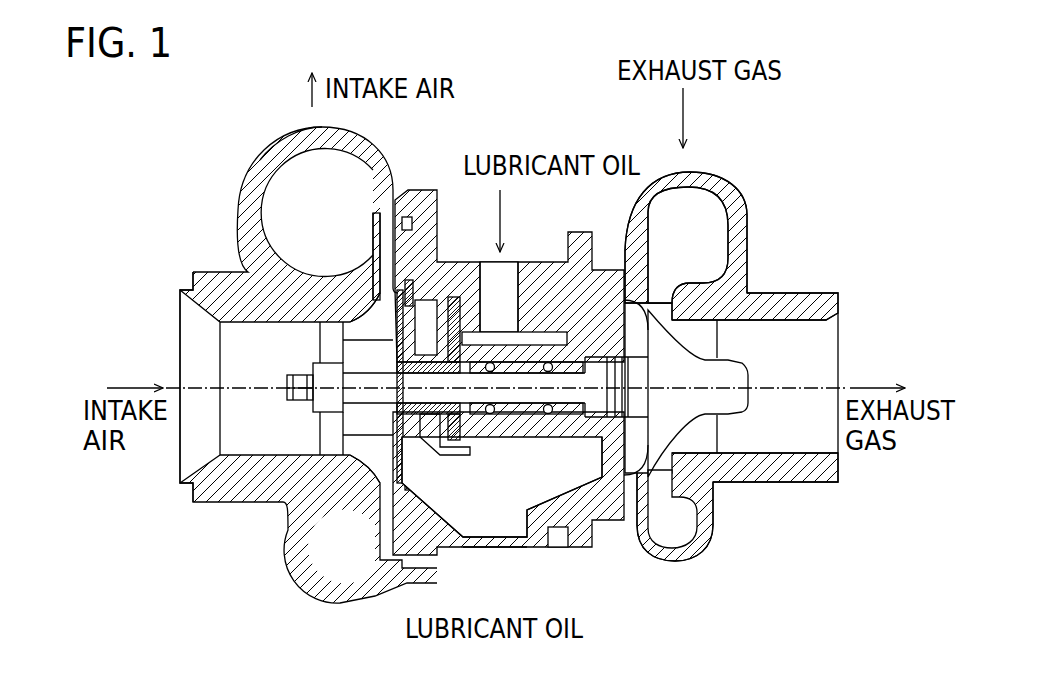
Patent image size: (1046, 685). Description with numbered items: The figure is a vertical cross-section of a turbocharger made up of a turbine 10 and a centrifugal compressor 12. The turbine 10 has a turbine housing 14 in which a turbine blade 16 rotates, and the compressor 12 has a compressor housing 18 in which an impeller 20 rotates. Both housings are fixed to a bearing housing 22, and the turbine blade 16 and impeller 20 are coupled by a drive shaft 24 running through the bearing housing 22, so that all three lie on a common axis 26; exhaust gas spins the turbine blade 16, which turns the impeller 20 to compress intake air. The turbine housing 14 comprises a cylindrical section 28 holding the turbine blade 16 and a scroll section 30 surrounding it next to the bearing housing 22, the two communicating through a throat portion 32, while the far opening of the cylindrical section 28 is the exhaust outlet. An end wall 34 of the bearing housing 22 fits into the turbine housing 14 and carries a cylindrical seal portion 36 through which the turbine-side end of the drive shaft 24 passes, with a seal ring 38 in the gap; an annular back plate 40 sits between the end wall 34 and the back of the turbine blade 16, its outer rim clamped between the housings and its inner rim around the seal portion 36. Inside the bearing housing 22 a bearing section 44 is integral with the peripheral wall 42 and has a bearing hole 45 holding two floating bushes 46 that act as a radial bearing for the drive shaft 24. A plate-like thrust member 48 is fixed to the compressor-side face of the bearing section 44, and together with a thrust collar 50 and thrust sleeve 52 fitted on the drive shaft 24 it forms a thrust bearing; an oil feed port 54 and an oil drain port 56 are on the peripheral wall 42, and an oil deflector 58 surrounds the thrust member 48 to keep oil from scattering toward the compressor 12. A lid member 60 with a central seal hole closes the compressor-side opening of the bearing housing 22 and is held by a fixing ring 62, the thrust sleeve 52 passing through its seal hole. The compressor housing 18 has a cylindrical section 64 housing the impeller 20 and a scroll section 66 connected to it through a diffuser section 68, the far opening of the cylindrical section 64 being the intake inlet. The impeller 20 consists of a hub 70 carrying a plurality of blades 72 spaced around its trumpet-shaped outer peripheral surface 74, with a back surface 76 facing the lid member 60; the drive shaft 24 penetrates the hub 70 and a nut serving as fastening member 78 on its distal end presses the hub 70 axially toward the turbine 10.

The turbine 10 is at (822, 150).
The compressor 12 is at (190, 152).
The turbine housing 14 is at (742, 190).
The turbine blade 16 is at (740, 352).
The compressor housing 18 is at (257, 150).
The impeller 20 is at (317, 355).
The bearing housing 22 is at (585, 545).
The drive shaft 24 is at (537, 413).
The axis 26 is at (810, 383).
The cylindrical section 28 is at (763, 290).
The scroll section 30 is at (712, 172).
The throat portion 32 is at (660, 290).
The end wall 34 is at (600, 437).
The seal portion 36 is at (650, 422).
The seal ring 38 is at (642, 398).
The back plate 40 is at (650, 323).
The peripheral wall 42 is at (457, 262).
The bearing section 44 is at (466, 450).
The bearing hole 45 is at (518, 438).
The floating bushes 46 is at (502, 297).
The thrust member 48 is at (496, 297).
The thrust collar 50 is at (395, 405).
The thrust sleeve 52 is at (393, 368).
The oil feed port 54 is at (487, 262).
The oil drain port 56 is at (475, 548).
The oil deflector 58 is at (465, 455).
The lid member 60 is at (393, 330).
The fixing ring 62 is at (390, 457).
The cylindrical section 64 is at (210, 270).
The scroll section 66 is at (287, 145).
The diffuser section 68 is at (388, 253).
The hub 70 is at (293, 393).
The blades 72 is at (320, 428).
The outer peripheral surface 74 is at (342, 360).
The back surface 76 is at (360, 297).
The fastening member 78 is at (287, 377).